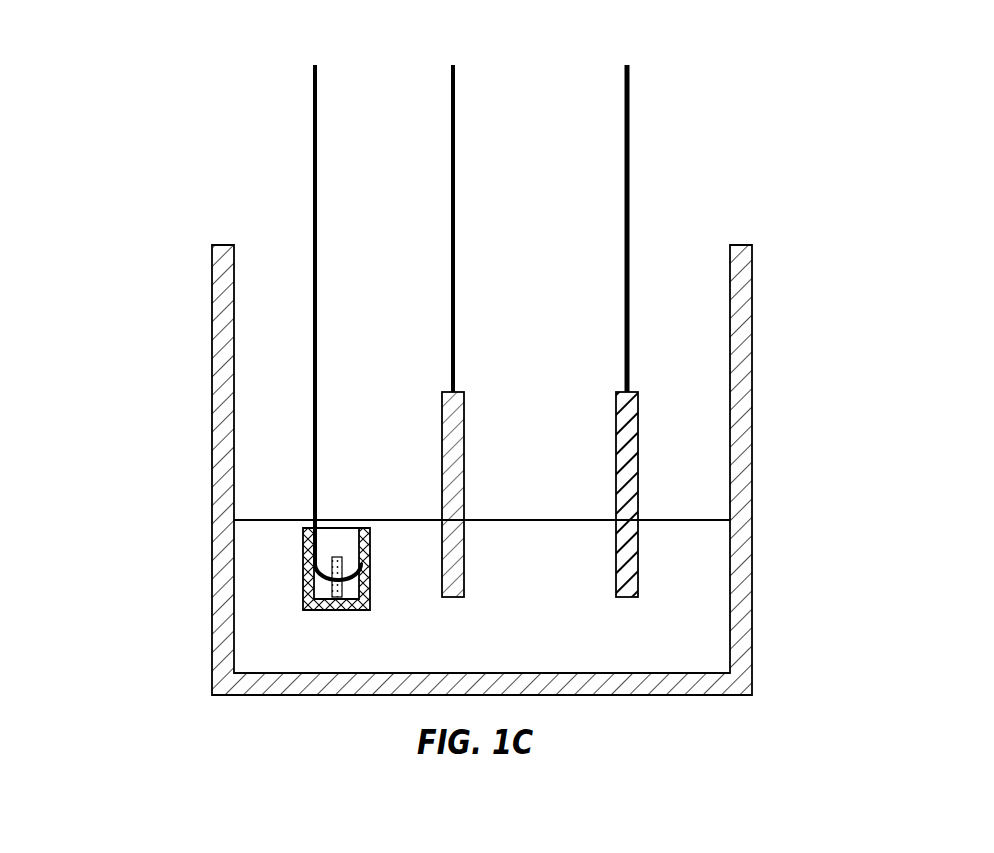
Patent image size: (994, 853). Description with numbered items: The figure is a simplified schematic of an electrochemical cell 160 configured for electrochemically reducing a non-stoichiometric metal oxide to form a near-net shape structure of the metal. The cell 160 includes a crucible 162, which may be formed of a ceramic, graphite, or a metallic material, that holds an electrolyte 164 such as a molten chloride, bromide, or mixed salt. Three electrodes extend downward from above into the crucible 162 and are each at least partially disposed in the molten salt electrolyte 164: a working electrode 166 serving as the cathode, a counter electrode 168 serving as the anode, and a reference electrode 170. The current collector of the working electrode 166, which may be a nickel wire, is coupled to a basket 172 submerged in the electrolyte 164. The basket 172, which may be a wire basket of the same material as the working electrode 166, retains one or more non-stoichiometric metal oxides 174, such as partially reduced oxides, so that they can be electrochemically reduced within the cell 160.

The electrochemical cell 160 is at (174, 124).
The crucible 162 is at (742, 468).
The electrolyte 164 is at (556, 641).
The working electrode 166 is at (317, 251).
The counter electrode 168 is at (630, 459).
The reference electrode 170 is at (456, 458).
The basket 172 is at (358, 528).
The non-stoichiometric metal oxide 174 is at (332, 592).